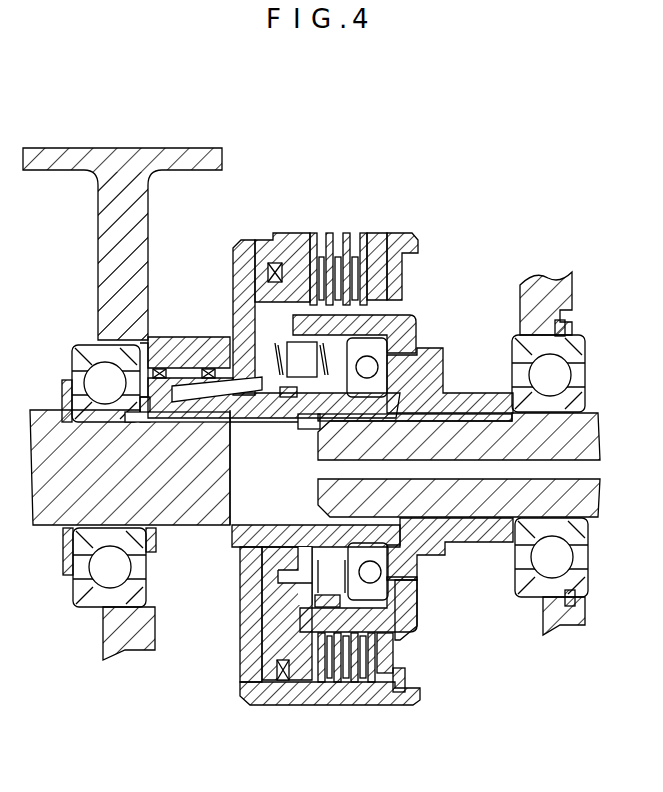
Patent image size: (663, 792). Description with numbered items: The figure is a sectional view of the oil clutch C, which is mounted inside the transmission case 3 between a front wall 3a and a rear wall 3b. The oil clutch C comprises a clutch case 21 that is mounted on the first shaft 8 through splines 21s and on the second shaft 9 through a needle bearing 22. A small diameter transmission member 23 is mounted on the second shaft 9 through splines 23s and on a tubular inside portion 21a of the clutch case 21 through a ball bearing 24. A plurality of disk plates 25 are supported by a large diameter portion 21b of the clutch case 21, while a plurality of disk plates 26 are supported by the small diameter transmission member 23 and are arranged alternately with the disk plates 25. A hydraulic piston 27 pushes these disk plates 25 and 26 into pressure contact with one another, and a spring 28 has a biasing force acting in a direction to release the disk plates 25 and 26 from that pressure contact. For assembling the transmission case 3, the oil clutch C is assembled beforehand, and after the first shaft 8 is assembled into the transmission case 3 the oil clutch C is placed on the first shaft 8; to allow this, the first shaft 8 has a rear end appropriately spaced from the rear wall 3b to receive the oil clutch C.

The transmission case 3 is at (51, 148).
The front wall 3a is at (152, 221).
The rear wall 3b is at (517, 284).
The first shaft 8 is at (48, 538).
The second shaft 9 is at (590, 438).
The clutch case 21 is at (238, 264).
The tubular inside portion 21a is at (430, 575).
The large diameter portion 21b is at (299, 238).
The splines 21s is at (198, 431).
The needle bearing 22 is at (320, 432).
The small diameter transmission member 23 is at (398, 318).
The splines 23s is at (450, 416).
The ball bearing 24 is at (408, 612).
The disk plates 25 is at (354, 232).
The disk plates 26 is at (356, 690).
The hydraulic piston 27 is at (258, 240).
The spring 28 is at (272, 338).
The oil clutch C is at (467, 189).